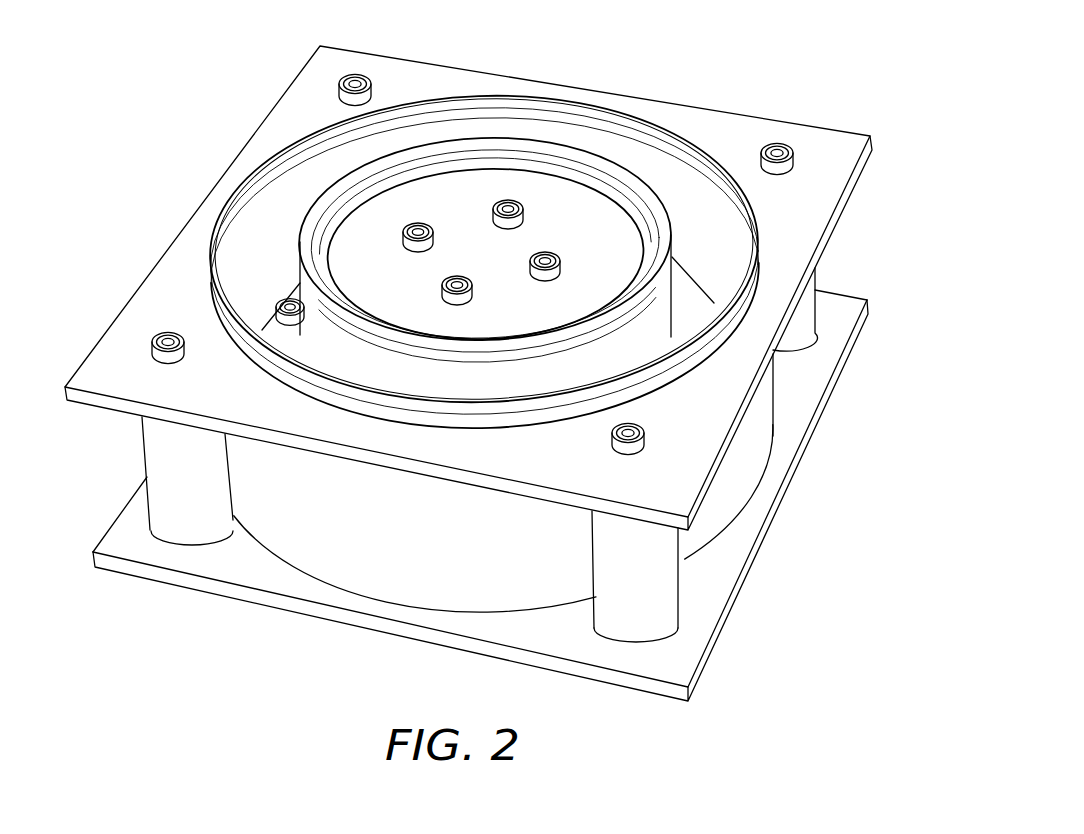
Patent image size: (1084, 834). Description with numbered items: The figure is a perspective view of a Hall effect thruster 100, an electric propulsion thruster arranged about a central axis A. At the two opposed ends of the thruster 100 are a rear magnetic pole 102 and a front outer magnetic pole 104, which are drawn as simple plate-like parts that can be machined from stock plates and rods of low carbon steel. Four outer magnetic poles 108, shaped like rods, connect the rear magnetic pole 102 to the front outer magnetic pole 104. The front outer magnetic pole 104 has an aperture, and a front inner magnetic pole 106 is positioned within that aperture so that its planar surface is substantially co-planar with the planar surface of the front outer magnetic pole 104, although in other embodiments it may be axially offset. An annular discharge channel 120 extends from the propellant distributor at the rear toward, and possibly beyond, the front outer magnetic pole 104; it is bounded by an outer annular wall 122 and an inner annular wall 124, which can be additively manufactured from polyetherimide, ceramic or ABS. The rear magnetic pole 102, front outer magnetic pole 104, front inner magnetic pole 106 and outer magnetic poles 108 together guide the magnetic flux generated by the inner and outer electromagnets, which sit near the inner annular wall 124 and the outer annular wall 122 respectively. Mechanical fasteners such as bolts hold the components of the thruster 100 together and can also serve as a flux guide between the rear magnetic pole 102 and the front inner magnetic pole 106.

The Hall effect thruster 100 is at (880, 270).
The rear magnetic pole 102 is at (118, 543).
The front outer magnetic pole 104 is at (299, 103).
The front inner magnetic pole 106 is at (573, 218).
The outer magnetic poles 108 is at (155, 458).
The discharge channel 120 is at (661, 177).
The outer annular wall 122 is at (217, 250).
The inner annular wall 124 is at (310, 233).
The central axis A is at (483, 253).